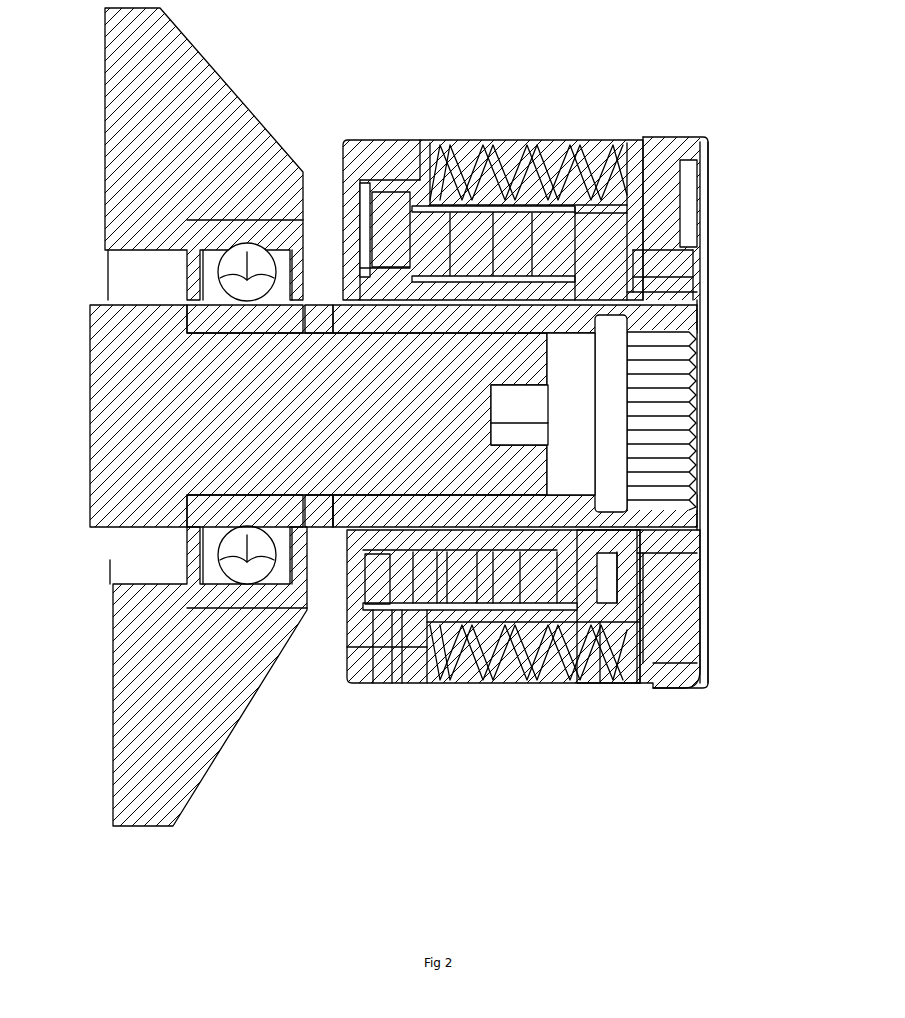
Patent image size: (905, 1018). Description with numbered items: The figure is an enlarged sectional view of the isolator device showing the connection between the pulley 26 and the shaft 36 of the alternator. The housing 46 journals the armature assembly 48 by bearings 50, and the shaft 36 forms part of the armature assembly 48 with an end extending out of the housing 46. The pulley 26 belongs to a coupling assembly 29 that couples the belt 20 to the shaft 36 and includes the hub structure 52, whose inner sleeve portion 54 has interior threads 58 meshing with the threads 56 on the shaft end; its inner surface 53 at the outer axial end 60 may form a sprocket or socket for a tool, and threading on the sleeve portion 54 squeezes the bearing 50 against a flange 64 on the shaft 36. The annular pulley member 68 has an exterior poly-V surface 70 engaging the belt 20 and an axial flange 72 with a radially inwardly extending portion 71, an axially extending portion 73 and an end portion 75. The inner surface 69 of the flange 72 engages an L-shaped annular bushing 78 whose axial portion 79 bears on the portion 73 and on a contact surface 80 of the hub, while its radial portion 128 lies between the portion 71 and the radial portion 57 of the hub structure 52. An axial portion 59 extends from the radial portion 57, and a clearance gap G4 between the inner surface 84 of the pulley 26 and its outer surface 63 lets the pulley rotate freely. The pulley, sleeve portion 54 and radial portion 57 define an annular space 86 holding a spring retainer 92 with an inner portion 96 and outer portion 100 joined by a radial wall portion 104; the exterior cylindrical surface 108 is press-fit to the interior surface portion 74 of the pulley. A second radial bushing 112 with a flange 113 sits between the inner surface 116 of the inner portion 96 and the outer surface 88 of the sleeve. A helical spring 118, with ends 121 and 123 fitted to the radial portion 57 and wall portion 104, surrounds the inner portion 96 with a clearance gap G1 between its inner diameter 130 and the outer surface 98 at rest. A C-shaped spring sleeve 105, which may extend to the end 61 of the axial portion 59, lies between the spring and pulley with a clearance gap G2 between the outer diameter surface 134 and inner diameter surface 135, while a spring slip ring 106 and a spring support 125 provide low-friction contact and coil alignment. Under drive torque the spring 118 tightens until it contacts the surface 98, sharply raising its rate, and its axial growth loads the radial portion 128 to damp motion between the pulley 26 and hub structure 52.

The belt 20 is at (506, 155).
The pulley 26 is at (736, 412).
The coupling assembly 29 is at (773, 160).
The shaft 36 is at (95, 538).
The housing 46 is at (118, 92).
The armature assembly 48 is at (130, 377).
The bearings 50 is at (217, 230).
The hub structure 52 is at (649, 415).
The inner surface 53 is at (705, 420).
The inner sleeve portion 54 is at (515, 419).
The threads 56 is at (457, 660).
The radial portion 57 is at (687, 606).
The interior threads 58 is at (378, 163).
The axial portion 59 is at (587, 659).
The outer axial end 60 is at (556, 309).
The end of axial portion 61 is at (610, 167).
The outer surface 63 is at (639, 137).
The flange 64 is at (200, 300).
The annular pulley member 68 is at (642, 174).
The inner surface of flange 69 is at (728, 203).
The poly-V surface 70 is at (548, 145).
The radially inwardly extending portion 71 is at (705, 404).
The axial flange 72 is at (705, 246).
The axially extending portion 73 is at (706, 257).
The cylindrical interior surface portion 74 is at (415, 693).
The radially outwardly extending end portion 75 is at (708, 609).
The annular bushing 78 is at (718, 536).
The axial extending portion 79 is at (718, 606).
The contact surface 80 is at (567, 507).
The inner surface of pulley 84 is at (527, 125).
The annular space 86 is at (692, 602).
The outer surface of hub structure 88 is at (302, 613).
The spring retainer 92 is at (307, 307).
The inner portion 96 is at (672, 426).
The outer surface of inner portion 98 is at (471, 183).
The outer portion 100 is at (357, 709).
The radial wall portion 104 is at (357, 678).
The spring sleeve 105 is at (476, 152).
The spring slip ring 106 is at (524, 139).
The exterior cylindrical surface 108 is at (383, 721).
The second radial bushing 112 is at (597, 505).
The flange of bushing 113 is at (685, 688).
The inner surface of inner portion 116 is at (517, 695).
The helical spring 118 is at (685, 185).
The spring end 121 is at (696, 198).
The spring end 123 is at (444, 685).
The spring support 125 is at (338, 696).
The radial extending portion 128 is at (718, 687).
The inner diameter 130 is at (485, 145).
The outer diameter surface 134 is at (531, 710).
The inner diameter surface 135 is at (528, 724).
The clearance gap G1 is at (447, 735).
The clearance gap G2 is at (530, 742).
The clearance gap G4 is at (618, 702).